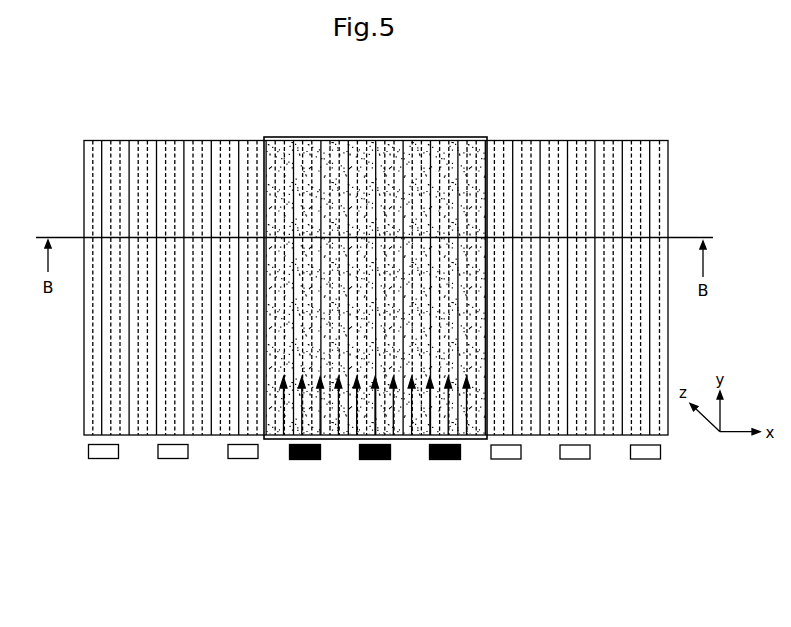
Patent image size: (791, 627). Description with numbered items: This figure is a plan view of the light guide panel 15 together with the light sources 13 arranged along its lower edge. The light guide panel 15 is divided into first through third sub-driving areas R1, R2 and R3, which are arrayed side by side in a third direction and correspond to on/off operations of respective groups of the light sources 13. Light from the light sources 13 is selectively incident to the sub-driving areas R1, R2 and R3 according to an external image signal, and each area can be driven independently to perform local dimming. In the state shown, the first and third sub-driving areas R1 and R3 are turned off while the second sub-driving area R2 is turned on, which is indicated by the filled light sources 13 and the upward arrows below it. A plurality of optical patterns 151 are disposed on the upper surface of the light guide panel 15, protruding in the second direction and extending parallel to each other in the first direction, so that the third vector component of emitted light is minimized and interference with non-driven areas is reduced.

The light guide panel 15 is at (84, 190).
The optical pattern 151 is at (102, 140).
The first sub-driving area R1 is at (180, 140).
The second sub-driving area R2 is at (373, 137).
The third sub-driving area R3 is at (571, 140).
The light source 13 is at (162, 470).